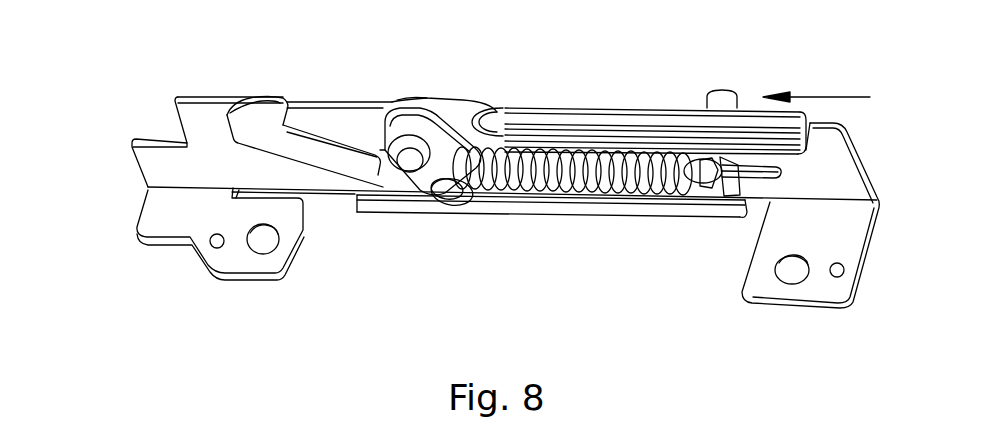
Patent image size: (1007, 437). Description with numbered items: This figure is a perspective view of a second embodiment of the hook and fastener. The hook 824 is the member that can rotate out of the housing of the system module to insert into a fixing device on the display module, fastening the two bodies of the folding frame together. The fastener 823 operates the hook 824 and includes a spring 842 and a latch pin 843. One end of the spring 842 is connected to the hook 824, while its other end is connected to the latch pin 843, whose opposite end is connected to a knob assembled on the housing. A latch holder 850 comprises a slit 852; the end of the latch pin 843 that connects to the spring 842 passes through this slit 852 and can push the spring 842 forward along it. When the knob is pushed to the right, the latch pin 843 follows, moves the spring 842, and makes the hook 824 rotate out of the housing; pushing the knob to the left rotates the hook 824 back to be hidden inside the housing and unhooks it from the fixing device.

The fastener 823 is at (104, 104).
The hook 824 is at (263, 94).
The spring 842 is at (600, 196).
The latch pin 843 is at (730, 106).
The latch holder 850 is at (166, 248).
The slit 852 is at (778, 168).